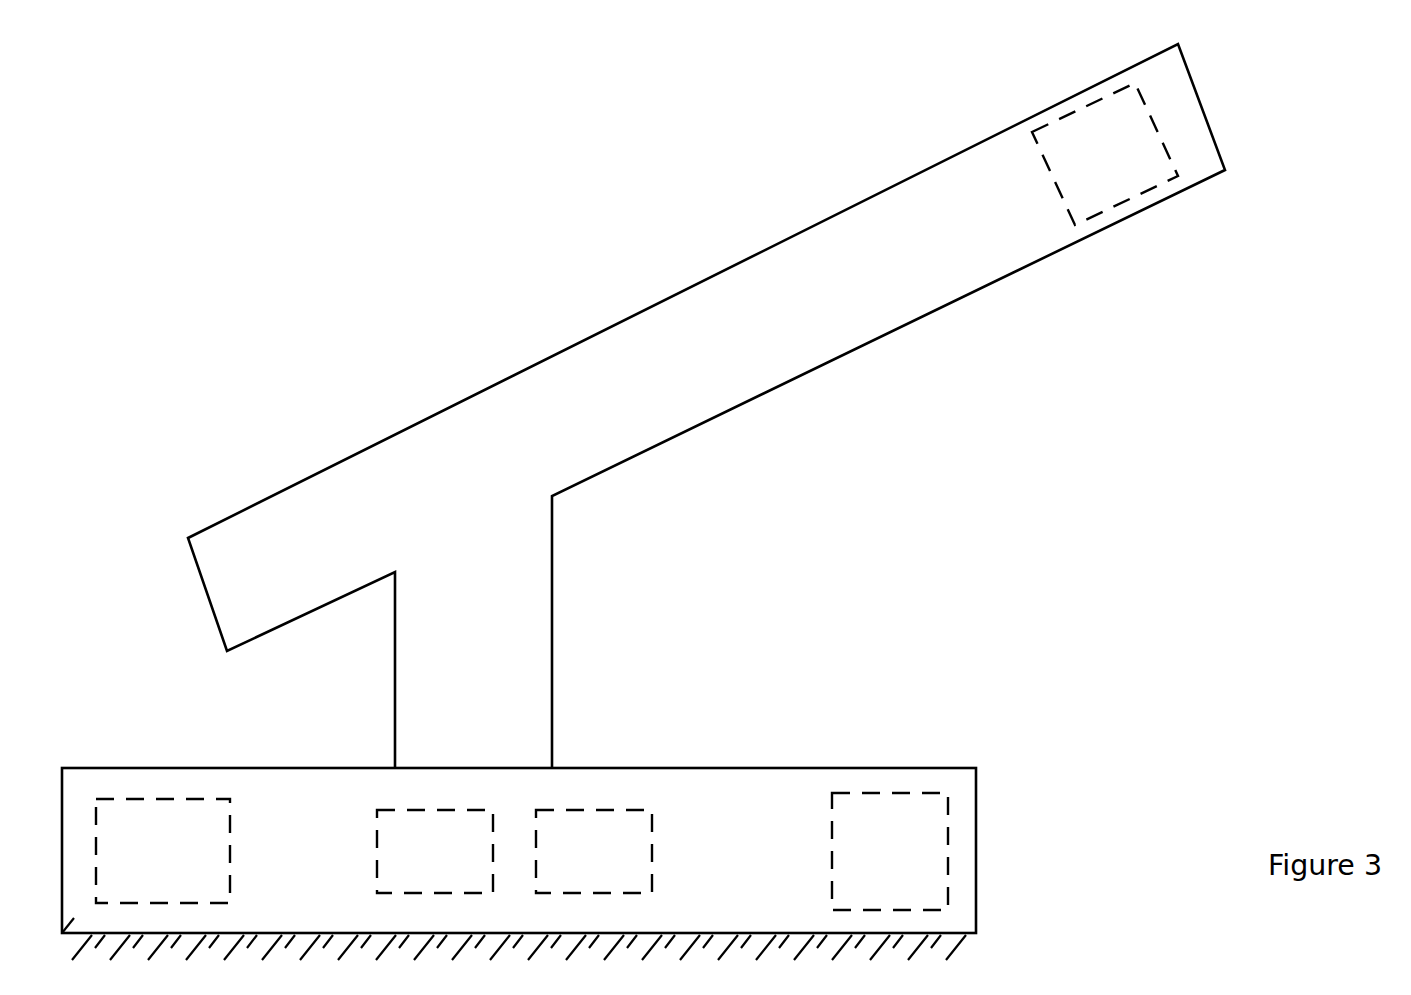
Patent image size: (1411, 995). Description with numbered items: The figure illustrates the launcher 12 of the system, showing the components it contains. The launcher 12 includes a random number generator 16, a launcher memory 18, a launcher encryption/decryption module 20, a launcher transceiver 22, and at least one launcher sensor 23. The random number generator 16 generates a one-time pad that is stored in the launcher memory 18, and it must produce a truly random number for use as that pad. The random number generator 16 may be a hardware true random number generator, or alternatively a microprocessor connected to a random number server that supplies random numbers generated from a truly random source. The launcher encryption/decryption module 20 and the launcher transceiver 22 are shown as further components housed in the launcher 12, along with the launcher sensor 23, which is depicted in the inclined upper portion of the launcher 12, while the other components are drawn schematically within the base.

The launcher 12 is at (299, 205).
The random number generator 16 is at (122, 799).
The launcher memory 18 is at (402, 810).
The launcher encryption/decryption module 20 is at (617, 809).
The launcher transceiver 22 is at (1143, 195).
The launcher sensor 23 is at (948, 830).